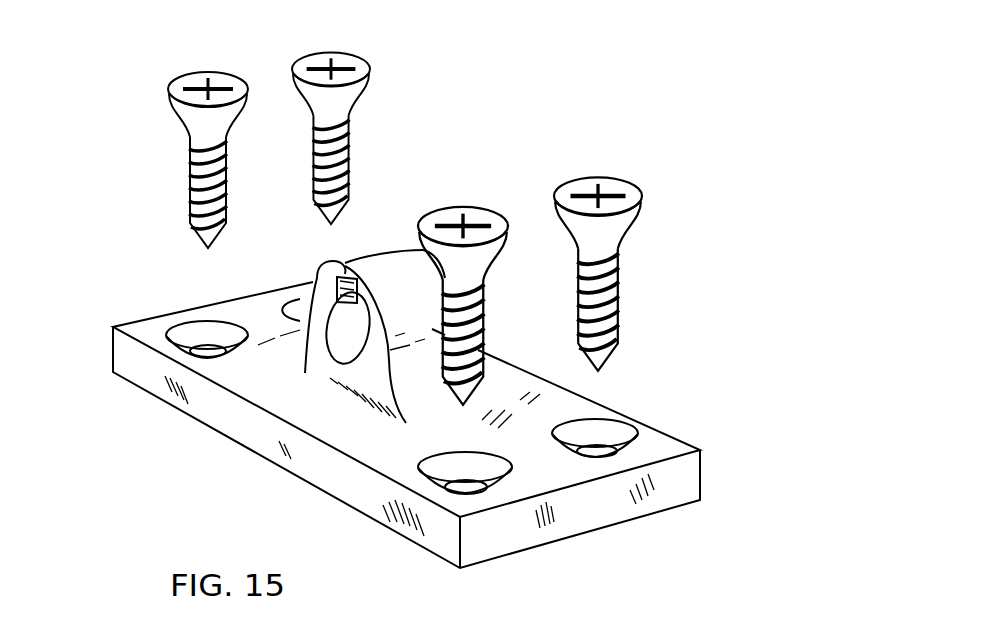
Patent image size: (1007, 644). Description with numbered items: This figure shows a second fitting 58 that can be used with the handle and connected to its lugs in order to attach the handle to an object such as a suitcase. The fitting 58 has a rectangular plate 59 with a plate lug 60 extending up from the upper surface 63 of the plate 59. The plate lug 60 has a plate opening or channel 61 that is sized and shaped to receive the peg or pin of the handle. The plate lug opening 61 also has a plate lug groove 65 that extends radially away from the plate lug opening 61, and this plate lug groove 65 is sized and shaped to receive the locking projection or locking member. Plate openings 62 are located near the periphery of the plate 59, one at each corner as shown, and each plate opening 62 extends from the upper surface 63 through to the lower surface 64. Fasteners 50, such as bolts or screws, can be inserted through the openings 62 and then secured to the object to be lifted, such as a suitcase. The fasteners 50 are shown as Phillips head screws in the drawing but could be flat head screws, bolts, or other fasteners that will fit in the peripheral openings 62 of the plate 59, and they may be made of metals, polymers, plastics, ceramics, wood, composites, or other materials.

The fasteners 50 is at (312, 53).
The fitting 58 is at (697, 325).
The rectangular plate 59 is at (457, 425).
The plate lug 60 is at (305, 302).
The plate opening or channel 61 is at (348, 335).
The plate openings 62 is at (300, 298).
The upper surface 63 is at (683, 441).
The lower surface 64 is at (660, 513).
The plate lug groove 65 is at (318, 262).